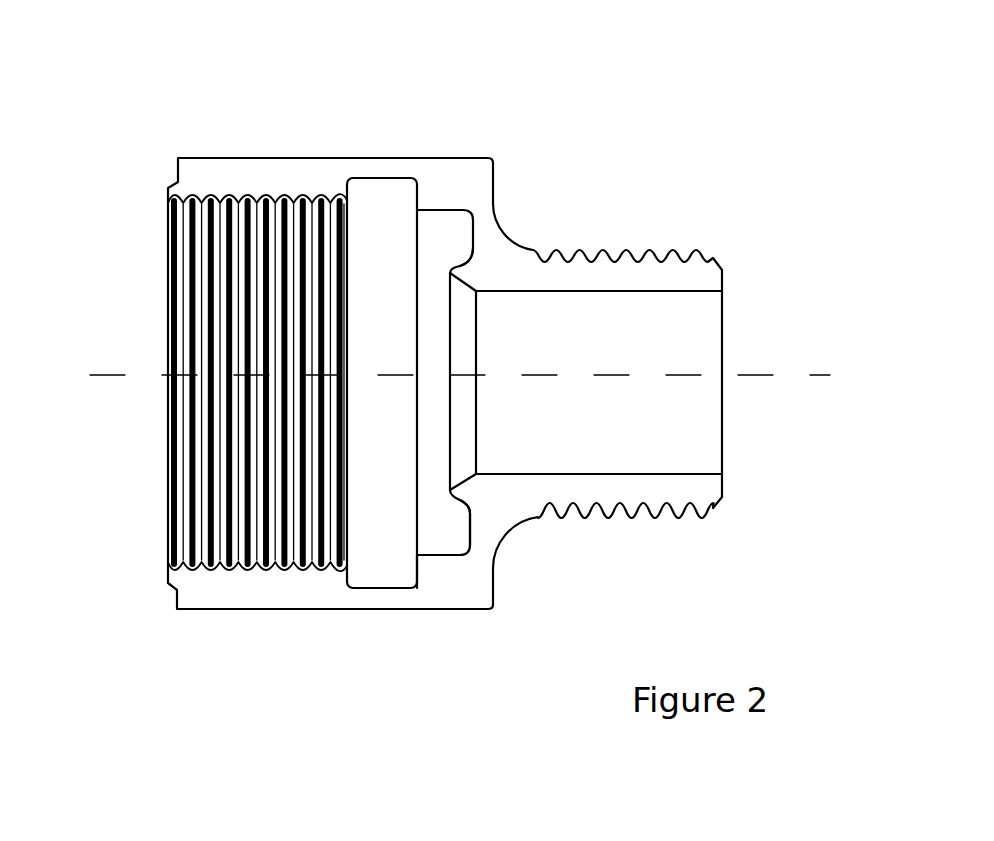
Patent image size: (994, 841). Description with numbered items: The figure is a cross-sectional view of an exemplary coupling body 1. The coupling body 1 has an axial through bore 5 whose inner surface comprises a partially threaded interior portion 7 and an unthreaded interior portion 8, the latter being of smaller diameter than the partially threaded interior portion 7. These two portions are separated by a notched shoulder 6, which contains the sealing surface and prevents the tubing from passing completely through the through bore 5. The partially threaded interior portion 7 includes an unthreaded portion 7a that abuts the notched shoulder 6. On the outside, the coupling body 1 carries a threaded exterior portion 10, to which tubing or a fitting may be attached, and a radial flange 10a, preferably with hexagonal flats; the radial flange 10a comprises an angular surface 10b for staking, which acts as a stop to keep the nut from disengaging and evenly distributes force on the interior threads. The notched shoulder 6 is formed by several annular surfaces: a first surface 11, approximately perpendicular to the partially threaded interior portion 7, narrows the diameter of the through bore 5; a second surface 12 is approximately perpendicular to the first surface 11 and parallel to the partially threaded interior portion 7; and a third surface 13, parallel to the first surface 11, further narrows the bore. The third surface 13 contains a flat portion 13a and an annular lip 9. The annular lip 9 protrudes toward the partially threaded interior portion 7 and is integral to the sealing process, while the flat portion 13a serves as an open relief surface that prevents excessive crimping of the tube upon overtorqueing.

The coupling body 1 is at (717, 60).
The axial through bore 5 is at (474, 376).
The notched shoulder 6 is at (451, 218).
The partially threaded interior portion 7 is at (187, 275).
The unthreaded portion 7a is at (378, 193).
The unthreaded interior portion 8 is at (705, 322).
The annular lip 9 is at (448, 474).
The threaded exterior portion 10 is at (627, 247).
The radial flange 10a is at (188, 615).
The angular surface 10b is at (167, 588).
The first surface 11 is at (415, 548).
The second surface 12 is at (438, 208).
The third surface 13 is at (484, 226).
The flat portion 13a is at (473, 530).